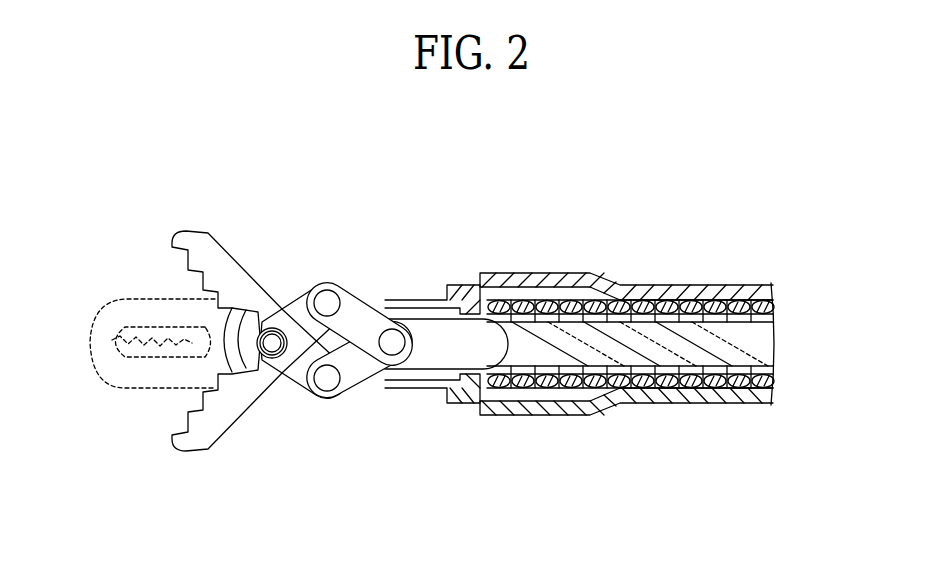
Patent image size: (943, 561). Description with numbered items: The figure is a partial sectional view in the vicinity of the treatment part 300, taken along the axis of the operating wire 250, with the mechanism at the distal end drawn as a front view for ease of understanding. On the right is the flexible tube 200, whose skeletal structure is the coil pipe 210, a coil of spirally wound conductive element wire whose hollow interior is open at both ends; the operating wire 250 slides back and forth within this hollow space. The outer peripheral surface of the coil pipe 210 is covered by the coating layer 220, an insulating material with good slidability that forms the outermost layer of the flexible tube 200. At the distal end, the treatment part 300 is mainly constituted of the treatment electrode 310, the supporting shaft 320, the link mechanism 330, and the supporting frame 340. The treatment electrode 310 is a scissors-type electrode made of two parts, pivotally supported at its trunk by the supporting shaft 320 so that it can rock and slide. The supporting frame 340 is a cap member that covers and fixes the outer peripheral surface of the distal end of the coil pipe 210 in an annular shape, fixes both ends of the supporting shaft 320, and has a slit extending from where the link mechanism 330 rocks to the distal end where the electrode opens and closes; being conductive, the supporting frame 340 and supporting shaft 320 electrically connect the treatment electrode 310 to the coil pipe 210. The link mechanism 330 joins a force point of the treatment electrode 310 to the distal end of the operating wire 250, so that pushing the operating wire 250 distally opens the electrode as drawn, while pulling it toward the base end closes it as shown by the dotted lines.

The treatment part 300 is at (139, 151).
The treatment electrode 310 is at (216, 234).
The supporting shaft 320 is at (276, 330).
The link mechanism 330 is at (355, 310).
The supporting frame 340 is at (470, 288).
The flexible tube 200 is at (771, 211).
The coil pipe 210 is at (734, 290).
The coating layer 220 is at (692, 290).
The operating wire 250 is at (753, 340).